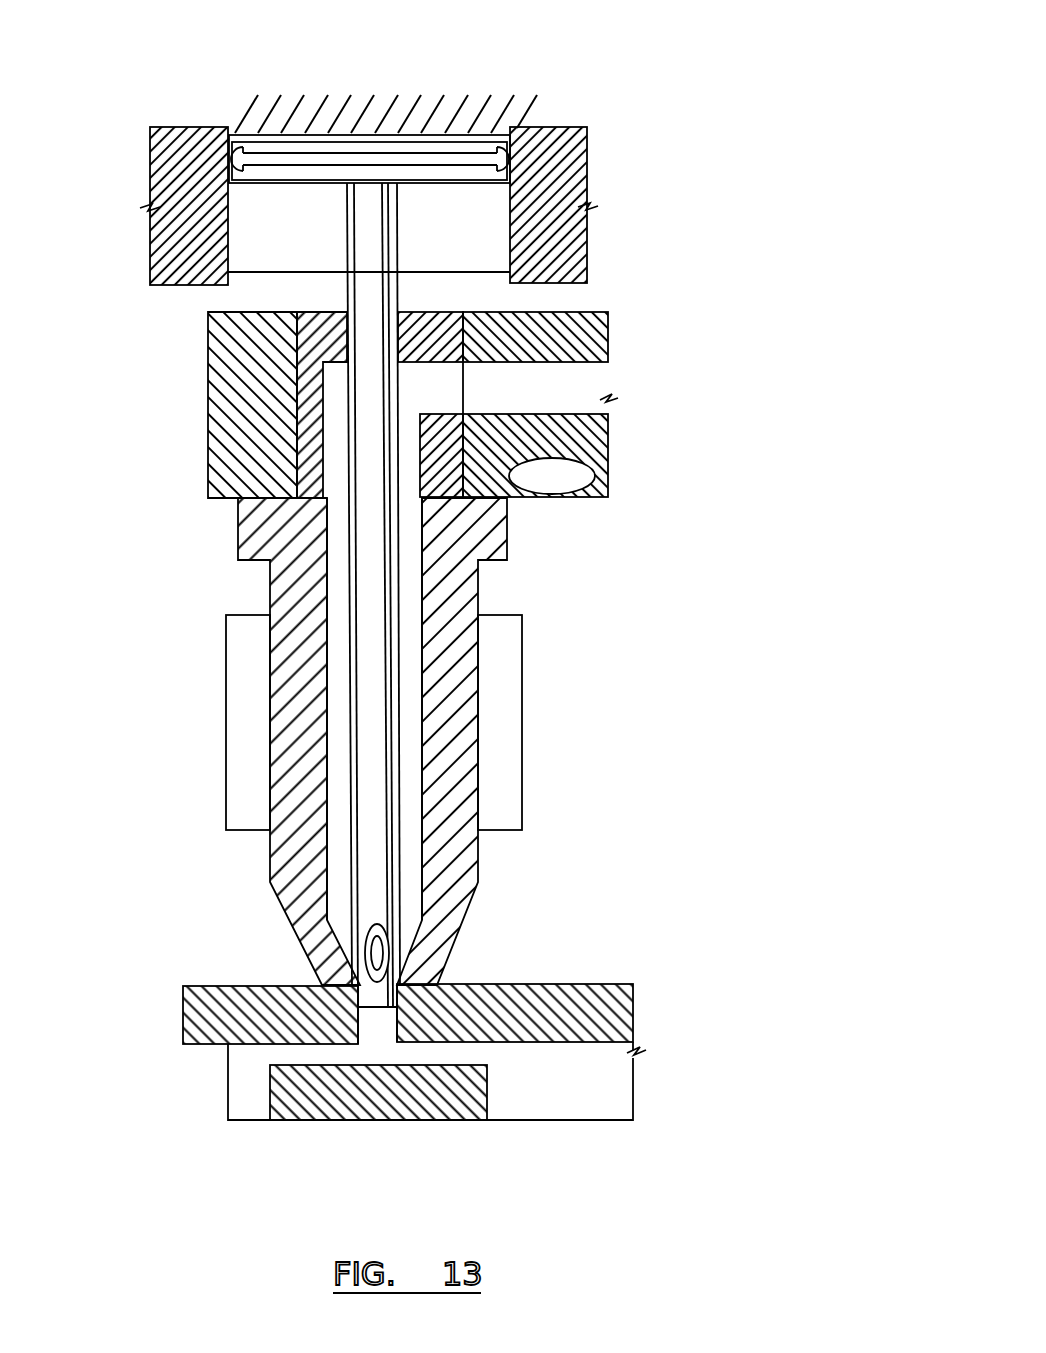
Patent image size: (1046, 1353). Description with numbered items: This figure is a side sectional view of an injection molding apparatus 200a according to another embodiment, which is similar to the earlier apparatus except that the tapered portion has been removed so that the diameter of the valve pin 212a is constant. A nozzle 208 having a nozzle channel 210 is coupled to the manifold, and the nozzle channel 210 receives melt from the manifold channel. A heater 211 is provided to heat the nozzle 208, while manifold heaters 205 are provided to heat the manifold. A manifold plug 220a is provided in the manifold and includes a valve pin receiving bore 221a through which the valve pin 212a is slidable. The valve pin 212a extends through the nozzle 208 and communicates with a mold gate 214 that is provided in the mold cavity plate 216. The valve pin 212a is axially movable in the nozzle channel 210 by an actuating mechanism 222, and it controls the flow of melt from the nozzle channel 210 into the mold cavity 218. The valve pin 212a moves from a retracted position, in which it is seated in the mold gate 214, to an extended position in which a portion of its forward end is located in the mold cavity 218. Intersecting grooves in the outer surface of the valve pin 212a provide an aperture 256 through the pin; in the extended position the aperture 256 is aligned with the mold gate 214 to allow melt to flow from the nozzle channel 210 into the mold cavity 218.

The injection molding apparatus 200a is at (474, 568).
The actuating mechanism 222 is at (417, 75).
The manifold plug 220a is at (218, 405).
The valve pin receiving bore 221a is at (501, 363).
The manifold heaters 205 is at (574, 455).
The nozzle 208 is at (439, 741).
The nozzle channel 210 is at (285, 709).
The valve pin 212a is at (478, 595).
The heater 211 is at (446, 722).
The aperture 256 is at (284, 953).
The mold cavity plate 216 is at (350, 1015).
The mold gate 214 is at (461, 990).
The mold cavity 218 is at (478, 1081).